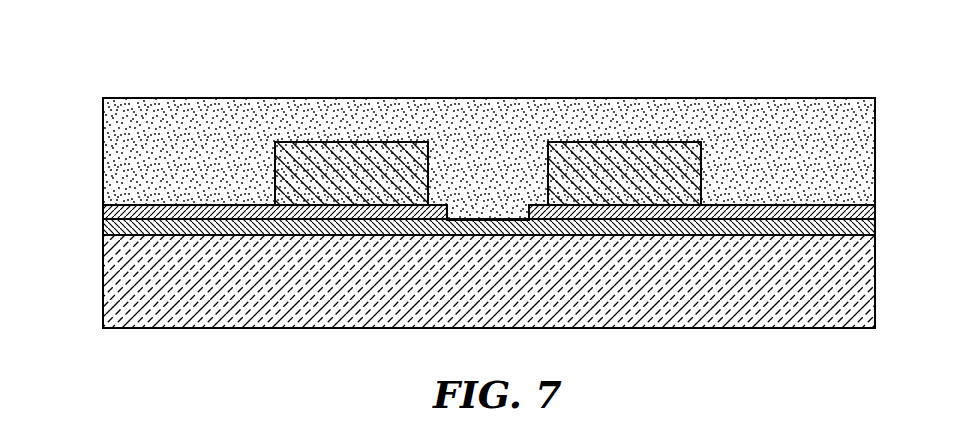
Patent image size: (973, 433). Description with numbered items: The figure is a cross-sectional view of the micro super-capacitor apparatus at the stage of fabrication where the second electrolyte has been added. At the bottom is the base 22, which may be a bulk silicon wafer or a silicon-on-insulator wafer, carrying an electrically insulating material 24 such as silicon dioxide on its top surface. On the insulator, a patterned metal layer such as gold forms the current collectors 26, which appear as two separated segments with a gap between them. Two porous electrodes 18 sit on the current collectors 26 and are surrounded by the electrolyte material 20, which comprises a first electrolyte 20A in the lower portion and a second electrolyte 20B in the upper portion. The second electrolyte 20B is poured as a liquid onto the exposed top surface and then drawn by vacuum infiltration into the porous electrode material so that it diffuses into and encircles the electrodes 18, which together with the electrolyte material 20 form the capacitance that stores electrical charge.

The electrodes 18 is at (349, 163).
The electrolyte material 20 is at (478, 135).
The first electrolyte 20A is at (883, 142).
The second electrolyte 20B is at (883, 98).
The base 22 is at (860, 288).
The electrically insulating material 24 is at (873, 230).
The current collectors 26 is at (876, 211).